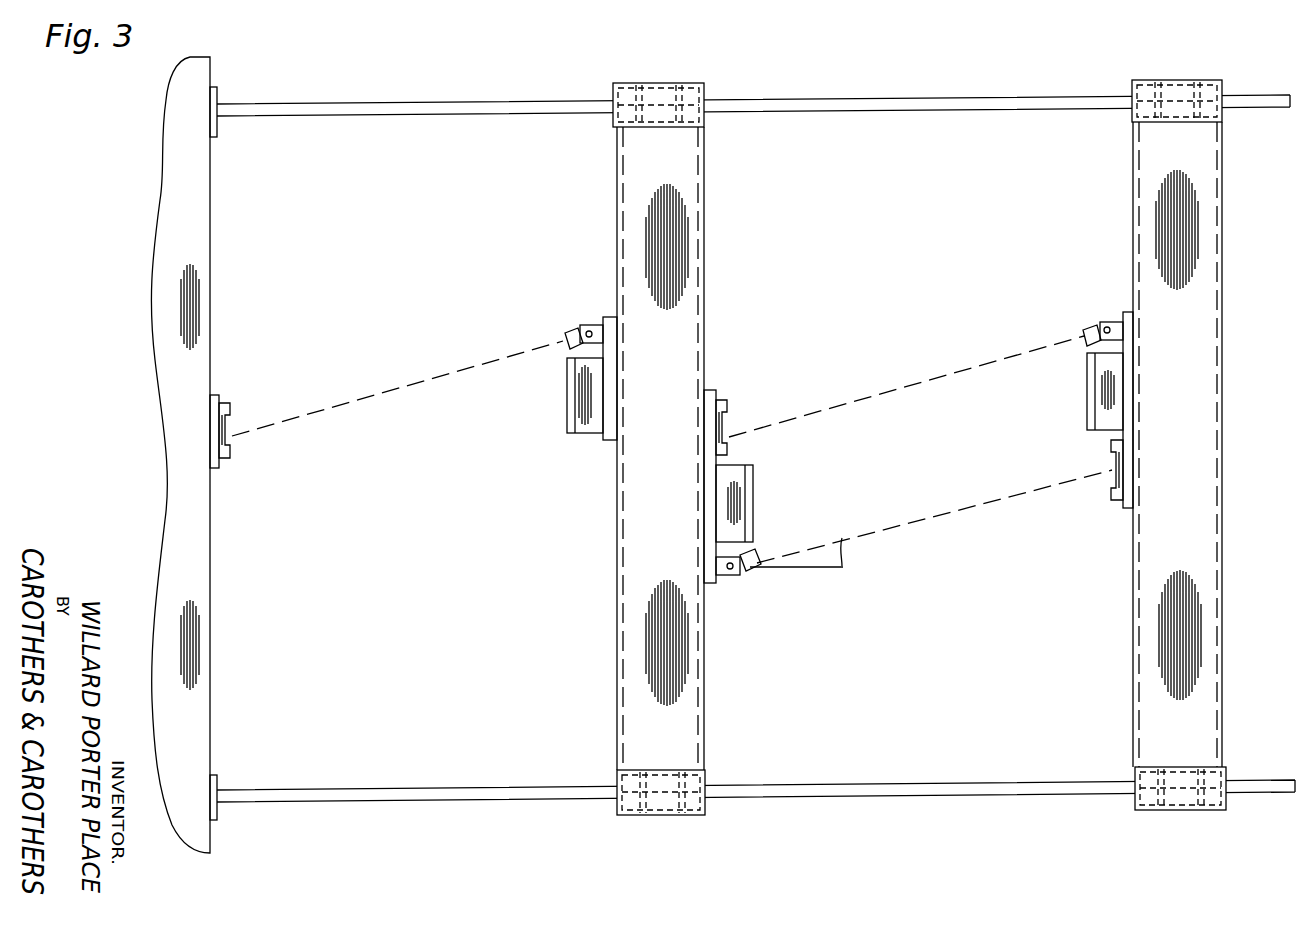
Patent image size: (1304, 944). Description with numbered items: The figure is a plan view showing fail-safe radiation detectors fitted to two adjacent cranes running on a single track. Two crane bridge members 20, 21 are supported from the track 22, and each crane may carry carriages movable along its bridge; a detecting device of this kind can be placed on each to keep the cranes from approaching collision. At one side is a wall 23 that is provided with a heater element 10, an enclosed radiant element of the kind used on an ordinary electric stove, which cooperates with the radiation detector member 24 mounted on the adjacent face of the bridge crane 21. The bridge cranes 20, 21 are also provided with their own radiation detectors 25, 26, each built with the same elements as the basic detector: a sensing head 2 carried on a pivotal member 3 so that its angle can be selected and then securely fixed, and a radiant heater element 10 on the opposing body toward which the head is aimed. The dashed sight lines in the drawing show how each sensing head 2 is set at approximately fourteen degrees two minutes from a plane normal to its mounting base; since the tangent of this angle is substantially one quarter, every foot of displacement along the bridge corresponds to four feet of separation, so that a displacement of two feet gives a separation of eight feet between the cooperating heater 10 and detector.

The sensing head 2 is at (566, 340).
The pivotal member 3 is at (592, 328).
The radiant member 10 is at (230, 425).
The crane bridge member 20 is at (1223, 210).
The crane bridge member 21 is at (706, 228).
The track 22 is at (398, 104).
The wall 23 is at (212, 218).
The radiation detector member 24 is at (568, 420).
The radiation detector 25 is at (1086, 395).
The radiation detector 26 is at (755, 482).